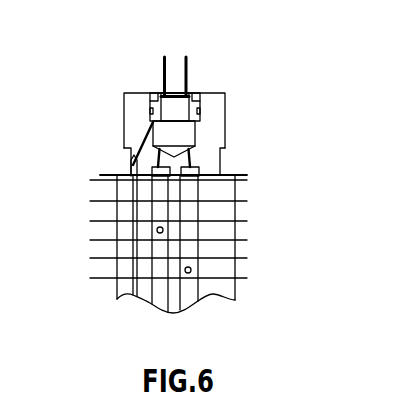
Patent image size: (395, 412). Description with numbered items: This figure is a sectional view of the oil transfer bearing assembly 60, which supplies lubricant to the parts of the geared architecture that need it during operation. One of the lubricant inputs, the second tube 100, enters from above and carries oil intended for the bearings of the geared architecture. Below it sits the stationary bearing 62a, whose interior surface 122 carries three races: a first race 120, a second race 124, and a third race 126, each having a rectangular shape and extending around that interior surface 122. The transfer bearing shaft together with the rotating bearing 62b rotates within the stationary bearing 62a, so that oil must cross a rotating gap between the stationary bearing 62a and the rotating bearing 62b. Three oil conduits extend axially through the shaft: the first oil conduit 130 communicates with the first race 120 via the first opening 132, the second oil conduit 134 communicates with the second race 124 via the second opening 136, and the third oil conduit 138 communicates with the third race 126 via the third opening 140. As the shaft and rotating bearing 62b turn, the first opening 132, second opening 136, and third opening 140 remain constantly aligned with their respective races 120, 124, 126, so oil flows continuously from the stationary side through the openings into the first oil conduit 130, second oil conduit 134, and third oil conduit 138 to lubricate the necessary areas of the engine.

The oil transfer bearing assembly 60 is at (111, 68).
The second tube 100 is at (178, 76).
The stationary bearing 62a is at (223, 113).
The rotating bearing 62b is at (237, 175).
The interior surface 122 is at (217, 172).
The third race 126 is at (200, 167).
The second race 124 is at (136, 160).
The first race 120 is at (129, 173).
The first opening 132 is at (127, 177).
The first oil conduit 130 is at (227, 193).
The second oil conduit 134 is at (227, 230).
The third oil conduit 138 is at (227, 268).
The second opening 136 is at (157, 230).
The third opening 140 is at (191, 270).